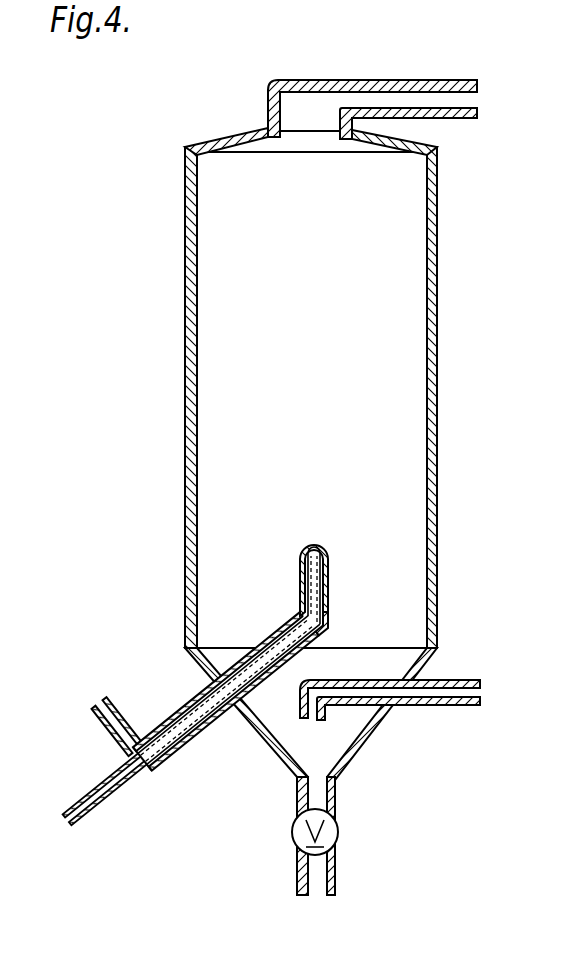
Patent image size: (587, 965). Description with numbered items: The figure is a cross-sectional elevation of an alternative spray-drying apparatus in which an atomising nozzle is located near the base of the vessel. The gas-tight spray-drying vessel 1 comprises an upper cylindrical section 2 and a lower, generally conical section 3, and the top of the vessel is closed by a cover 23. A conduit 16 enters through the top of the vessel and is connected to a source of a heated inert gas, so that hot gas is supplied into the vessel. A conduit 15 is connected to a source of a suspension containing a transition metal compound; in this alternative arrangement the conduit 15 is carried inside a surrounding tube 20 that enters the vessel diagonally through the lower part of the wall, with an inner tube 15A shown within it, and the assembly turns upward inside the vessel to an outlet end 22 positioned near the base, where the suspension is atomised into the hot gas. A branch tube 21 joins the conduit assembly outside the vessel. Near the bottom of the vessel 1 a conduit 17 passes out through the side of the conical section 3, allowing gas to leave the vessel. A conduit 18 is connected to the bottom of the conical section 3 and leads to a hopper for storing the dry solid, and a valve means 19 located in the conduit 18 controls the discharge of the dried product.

The spray-drying vessel 1 is at (184, 329).
The upper cylindrical section 2 is at (440, 237).
The lower conical section 3 is at (365, 750).
The conduit 15 is at (66, 822).
The inner tube 15A is at (188, 700).
The conduit 16 is at (437, 80).
The conduit 17 is at (463, 680).
The conduit 18 is at (335, 878).
The valve means 19 is at (338, 826).
The jacket tube 20 is at (270, 634).
The branch tube 21 is at (90, 712).
The tube outlet end 22 is at (316, 545).
The cover 23 is at (220, 130).